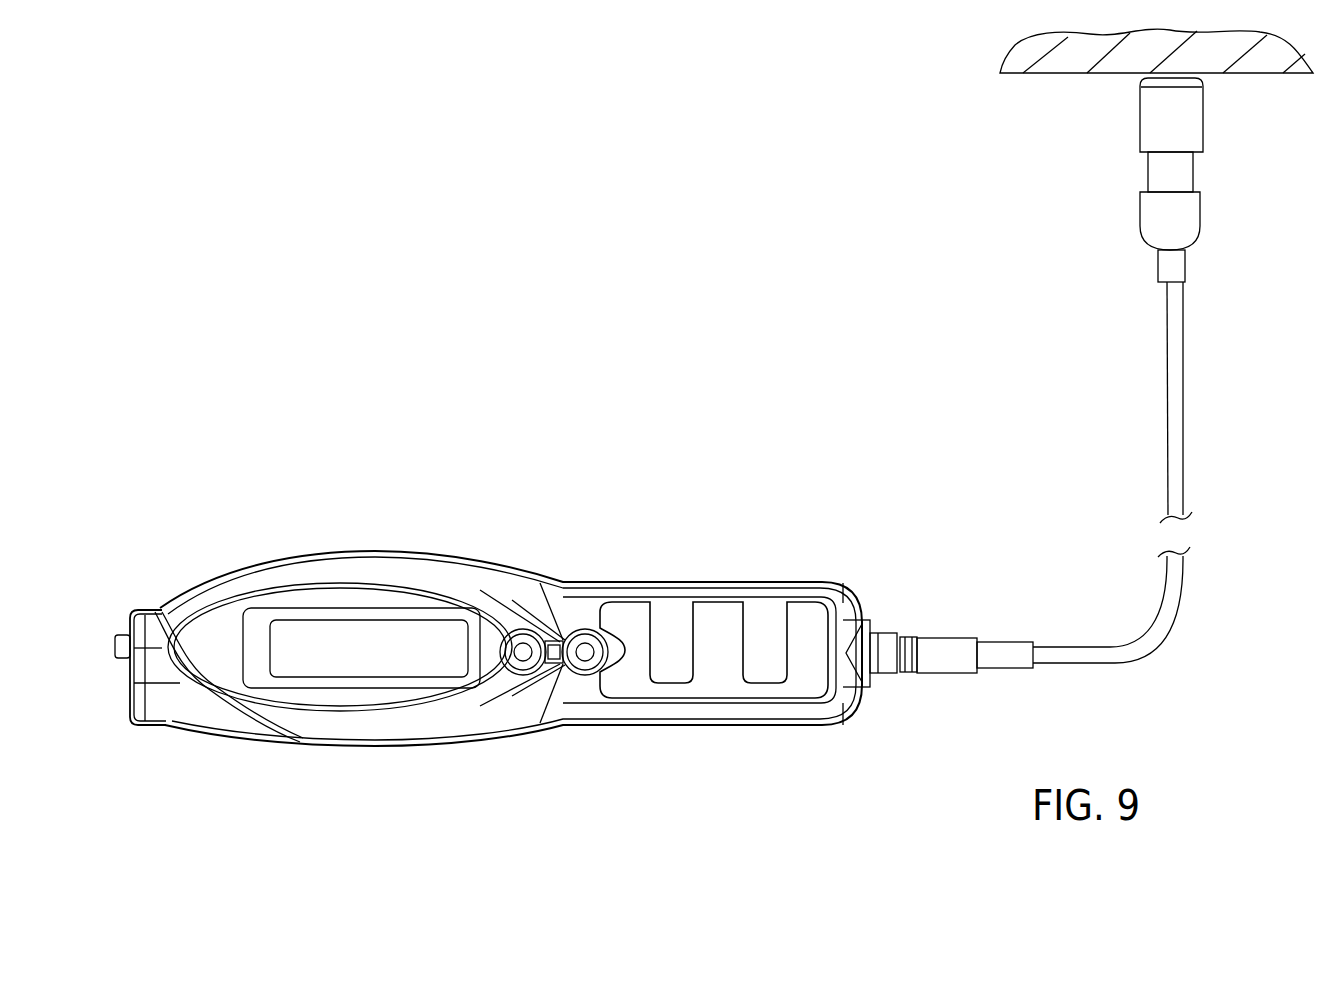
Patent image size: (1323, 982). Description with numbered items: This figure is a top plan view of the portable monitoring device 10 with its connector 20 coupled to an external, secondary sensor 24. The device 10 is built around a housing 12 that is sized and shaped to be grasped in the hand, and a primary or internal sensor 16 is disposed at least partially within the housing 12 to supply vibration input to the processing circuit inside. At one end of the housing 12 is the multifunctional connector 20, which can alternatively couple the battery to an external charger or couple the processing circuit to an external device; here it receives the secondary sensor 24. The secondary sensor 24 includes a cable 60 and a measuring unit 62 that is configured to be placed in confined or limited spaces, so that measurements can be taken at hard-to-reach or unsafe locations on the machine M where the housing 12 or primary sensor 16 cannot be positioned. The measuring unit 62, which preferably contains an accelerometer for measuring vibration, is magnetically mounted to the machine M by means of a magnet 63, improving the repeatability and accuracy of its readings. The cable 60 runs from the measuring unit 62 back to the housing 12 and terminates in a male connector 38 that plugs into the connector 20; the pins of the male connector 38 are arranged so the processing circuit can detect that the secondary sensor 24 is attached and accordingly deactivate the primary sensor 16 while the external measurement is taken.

The portable monitoring device 10 is at (484, 452).
The housing 12 is at (726, 758).
The primary sensor 16 is at (109, 620).
The connector 20 is at (893, 608).
The male connector 38 is at (914, 692).
The secondary sensor 24 is at (1040, 363).
The cable 60 is at (1195, 601).
The measuring unit 62 is at (1243, 180).
The magnet 63 is at (1192, 125).
The machine M is at (1066, 90).